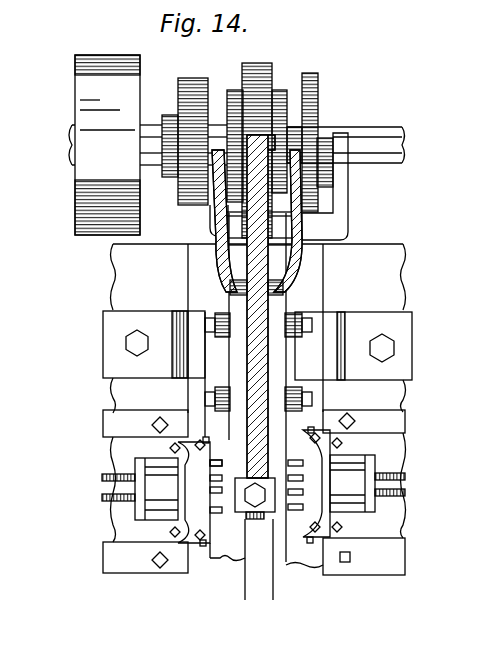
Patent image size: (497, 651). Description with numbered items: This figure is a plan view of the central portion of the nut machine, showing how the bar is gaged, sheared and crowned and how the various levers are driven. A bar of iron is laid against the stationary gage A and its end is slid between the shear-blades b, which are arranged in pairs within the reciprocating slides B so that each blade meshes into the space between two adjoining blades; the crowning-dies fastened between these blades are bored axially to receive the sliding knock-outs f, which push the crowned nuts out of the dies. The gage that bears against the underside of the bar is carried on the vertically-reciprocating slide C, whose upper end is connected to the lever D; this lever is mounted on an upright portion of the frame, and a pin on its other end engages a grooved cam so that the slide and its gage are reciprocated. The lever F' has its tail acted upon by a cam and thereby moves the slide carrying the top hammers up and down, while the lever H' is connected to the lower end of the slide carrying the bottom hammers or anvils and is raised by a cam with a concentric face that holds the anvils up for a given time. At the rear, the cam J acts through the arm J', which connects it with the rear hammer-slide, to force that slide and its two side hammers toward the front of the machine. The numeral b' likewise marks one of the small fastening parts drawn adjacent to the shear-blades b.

The cam J is at (193, 132).
The arm J' is at (194, 220).
The grooved cam D' is at (235, 133).
The lever H' is at (325, 186).
The lever D is at (217, 221).
The lever F' is at (243, 306).
The vertically-reciprocating slide C is at (188, 393).
The reciprocating slide B is at (248, 486).
The knock-out f is at (102, 477).
The shear-blade b is at (256, 488).
The bolt b' is at (266, 463).
The stationary gage A is at (240, 582).